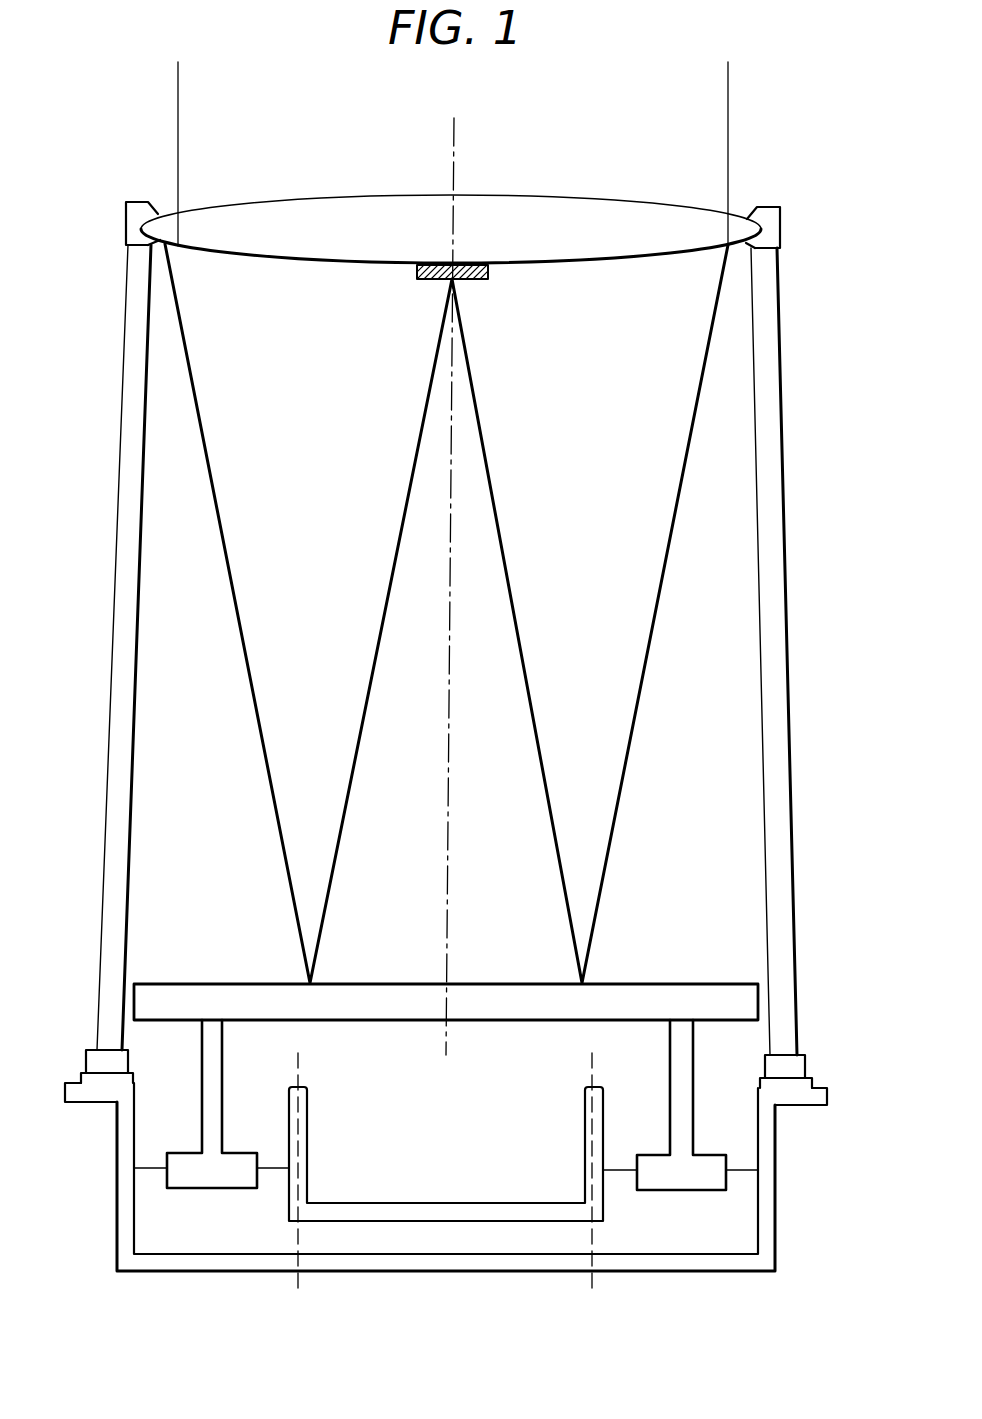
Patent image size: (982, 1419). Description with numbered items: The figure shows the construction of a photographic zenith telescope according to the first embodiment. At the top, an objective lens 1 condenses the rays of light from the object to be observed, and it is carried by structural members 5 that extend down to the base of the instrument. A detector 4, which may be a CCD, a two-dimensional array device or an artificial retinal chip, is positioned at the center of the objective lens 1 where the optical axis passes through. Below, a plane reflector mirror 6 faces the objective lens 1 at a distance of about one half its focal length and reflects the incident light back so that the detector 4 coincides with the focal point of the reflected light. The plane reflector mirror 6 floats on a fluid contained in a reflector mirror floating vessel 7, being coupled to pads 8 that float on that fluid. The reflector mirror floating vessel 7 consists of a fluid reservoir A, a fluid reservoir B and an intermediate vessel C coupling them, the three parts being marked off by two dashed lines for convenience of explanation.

The objective lens 1 is at (561, 195).
The detector 4 is at (480, 280).
The structural members 5 is at (798, 406).
The plane reflector mirror 6 is at (650, 983).
The reflector mirror floating vessel 7 is at (776, 1214).
The pads 8 is at (208, 1188).